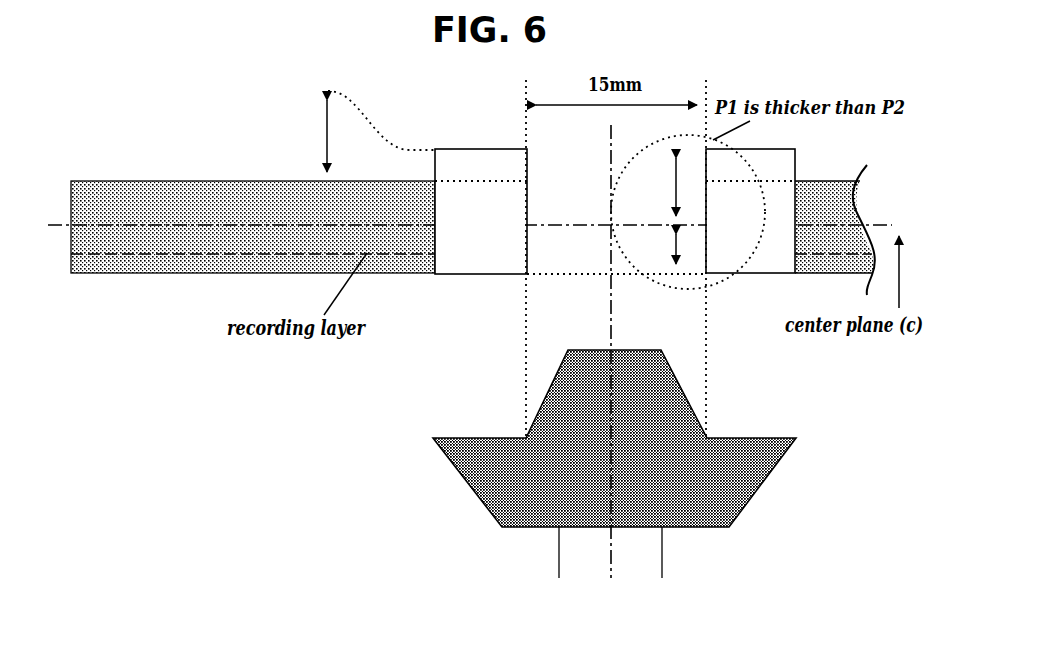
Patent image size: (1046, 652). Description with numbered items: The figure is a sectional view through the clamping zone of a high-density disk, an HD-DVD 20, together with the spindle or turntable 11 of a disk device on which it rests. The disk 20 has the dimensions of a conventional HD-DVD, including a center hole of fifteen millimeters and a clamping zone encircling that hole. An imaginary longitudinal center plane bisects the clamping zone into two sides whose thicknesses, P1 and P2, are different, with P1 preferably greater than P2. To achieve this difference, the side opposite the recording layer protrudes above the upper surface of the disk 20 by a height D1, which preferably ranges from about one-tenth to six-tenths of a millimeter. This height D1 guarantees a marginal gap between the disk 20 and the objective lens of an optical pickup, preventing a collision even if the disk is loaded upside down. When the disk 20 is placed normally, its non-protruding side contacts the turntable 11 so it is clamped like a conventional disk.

The HD-DVD 20 is at (222, 180).
The turntable 11 is at (690, 412).
The height D1 is at (360, 131).
The thickness P1 is at (655, 187).
The thickness P2 is at (655, 249).